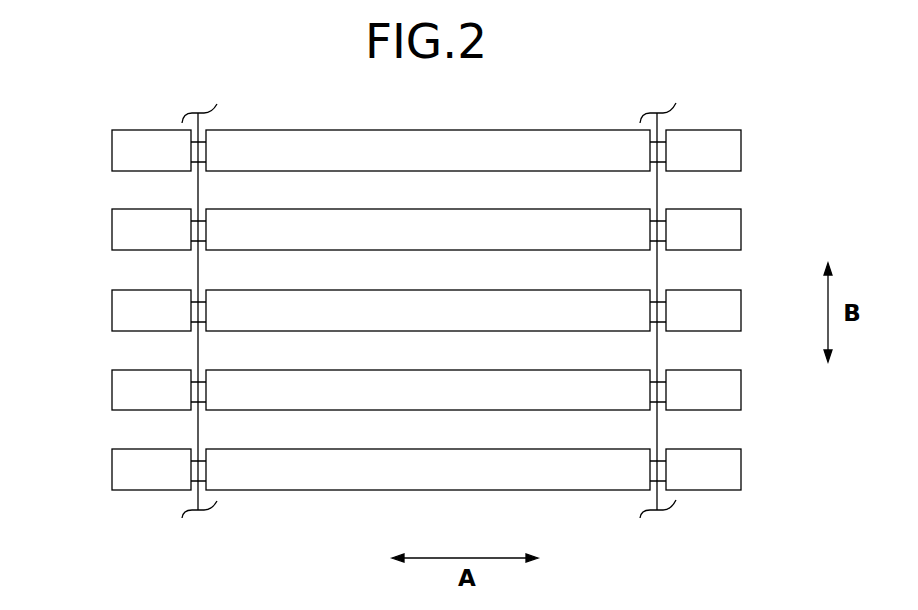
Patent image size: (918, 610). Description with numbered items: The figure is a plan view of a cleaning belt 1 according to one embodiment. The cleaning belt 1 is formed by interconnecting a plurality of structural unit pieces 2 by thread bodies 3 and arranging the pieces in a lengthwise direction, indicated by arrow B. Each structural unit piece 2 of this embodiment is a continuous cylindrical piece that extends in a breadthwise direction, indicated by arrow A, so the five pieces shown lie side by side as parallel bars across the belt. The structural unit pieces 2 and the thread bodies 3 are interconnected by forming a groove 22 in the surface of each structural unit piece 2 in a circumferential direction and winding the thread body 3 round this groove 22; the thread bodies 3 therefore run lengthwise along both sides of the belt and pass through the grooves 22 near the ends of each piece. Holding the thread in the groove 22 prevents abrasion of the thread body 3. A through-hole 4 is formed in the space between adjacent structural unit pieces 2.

The cleaning belt 1 is at (503, 110).
The structural unit piece 2 is at (261, 153).
The thread body 3 is at (198, 350).
The through-hole 4 is at (378, 195).
The groove 22 is at (194, 172).